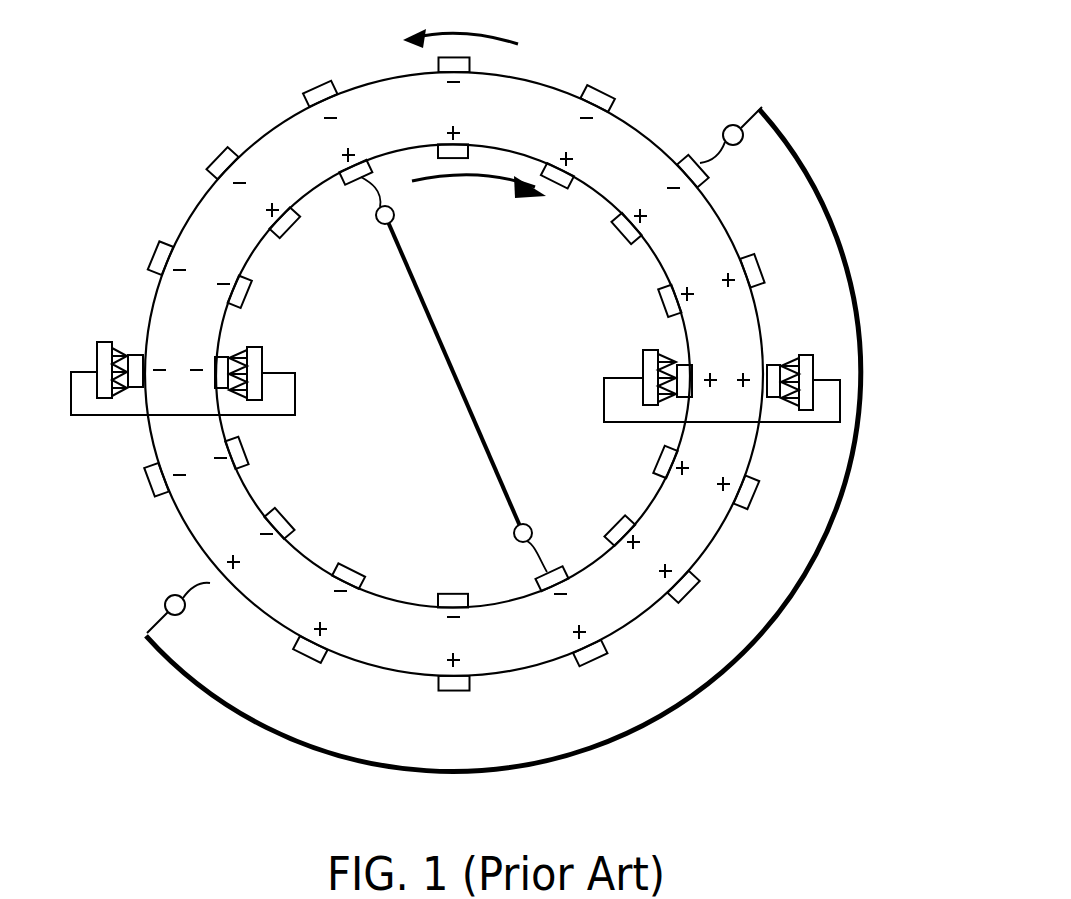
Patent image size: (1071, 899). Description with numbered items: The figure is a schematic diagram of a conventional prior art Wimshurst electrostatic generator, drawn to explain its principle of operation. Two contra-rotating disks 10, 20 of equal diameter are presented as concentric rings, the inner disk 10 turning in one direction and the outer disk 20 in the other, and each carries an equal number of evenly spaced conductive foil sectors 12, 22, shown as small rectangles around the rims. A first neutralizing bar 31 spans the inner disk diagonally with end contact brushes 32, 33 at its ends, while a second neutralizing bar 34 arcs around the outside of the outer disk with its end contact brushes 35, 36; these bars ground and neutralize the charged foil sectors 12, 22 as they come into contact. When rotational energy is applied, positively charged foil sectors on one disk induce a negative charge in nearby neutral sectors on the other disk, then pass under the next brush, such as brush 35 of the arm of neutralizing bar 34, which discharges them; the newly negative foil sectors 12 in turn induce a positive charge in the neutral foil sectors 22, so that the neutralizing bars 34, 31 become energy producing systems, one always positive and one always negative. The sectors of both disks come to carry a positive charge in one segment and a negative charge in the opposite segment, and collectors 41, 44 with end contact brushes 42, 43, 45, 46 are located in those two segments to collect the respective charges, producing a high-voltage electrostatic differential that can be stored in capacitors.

The disk 10 is at (245, 258).
The foil sectors 12 is at (287, 518).
The disk 20 is at (202, 190).
The foil sectors 22 is at (307, 658).
The neutralizing bar 31 is at (492, 470).
The end contact brush 32 is at (365, 200).
The end contact brush 33 is at (541, 546).
The neutralizing bar 34 is at (787, 133).
The end contact brush 35 is at (205, 585).
The end contact brush 36 is at (708, 158).
The collector 41 is at (297, 391).
The end contact brush 42 is at (256, 347).
The end contact brush 43 is at (102, 342).
The collector 44 is at (840, 398).
The end contact brush 45 is at (652, 348).
The end contact brush 46 is at (806, 355).